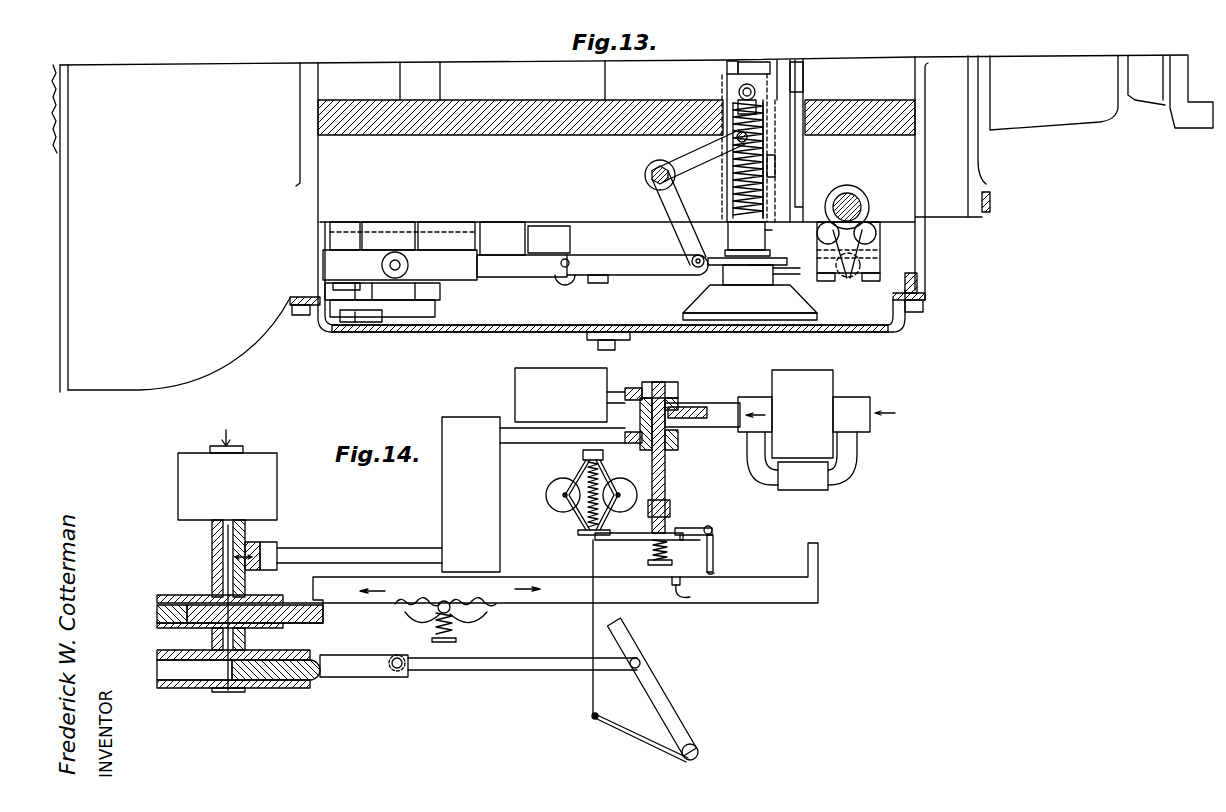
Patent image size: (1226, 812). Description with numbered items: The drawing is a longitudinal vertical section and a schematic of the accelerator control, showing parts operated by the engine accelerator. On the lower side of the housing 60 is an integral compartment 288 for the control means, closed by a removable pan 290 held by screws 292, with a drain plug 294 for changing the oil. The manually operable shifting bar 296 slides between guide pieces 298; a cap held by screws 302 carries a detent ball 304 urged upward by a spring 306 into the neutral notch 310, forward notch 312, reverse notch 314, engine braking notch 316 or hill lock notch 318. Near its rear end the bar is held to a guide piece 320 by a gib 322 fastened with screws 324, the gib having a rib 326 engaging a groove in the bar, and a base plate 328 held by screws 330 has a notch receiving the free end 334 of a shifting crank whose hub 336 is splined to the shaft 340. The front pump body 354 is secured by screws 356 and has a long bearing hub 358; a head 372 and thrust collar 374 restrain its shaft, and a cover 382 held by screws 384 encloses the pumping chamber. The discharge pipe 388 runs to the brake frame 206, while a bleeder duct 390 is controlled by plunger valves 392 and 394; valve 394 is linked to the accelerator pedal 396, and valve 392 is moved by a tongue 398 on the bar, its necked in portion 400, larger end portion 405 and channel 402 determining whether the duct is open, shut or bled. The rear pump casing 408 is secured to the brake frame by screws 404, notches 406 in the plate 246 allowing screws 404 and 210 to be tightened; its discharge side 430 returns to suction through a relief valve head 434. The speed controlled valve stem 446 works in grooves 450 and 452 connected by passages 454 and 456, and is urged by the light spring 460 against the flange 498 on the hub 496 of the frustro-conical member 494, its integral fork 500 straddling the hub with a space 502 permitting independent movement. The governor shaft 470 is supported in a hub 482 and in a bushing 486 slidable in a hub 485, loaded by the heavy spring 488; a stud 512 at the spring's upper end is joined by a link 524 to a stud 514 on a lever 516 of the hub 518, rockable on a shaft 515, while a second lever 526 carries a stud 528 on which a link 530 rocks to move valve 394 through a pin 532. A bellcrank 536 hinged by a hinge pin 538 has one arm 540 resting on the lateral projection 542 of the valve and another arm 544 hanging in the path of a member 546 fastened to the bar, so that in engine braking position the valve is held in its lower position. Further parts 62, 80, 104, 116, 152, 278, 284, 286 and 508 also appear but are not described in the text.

In FIG. 13, the housing 60 is at (340, 118).
In FIG. 13, the curved housing wall 62 is at (256, 330).
In FIG. 13, the housing top 80 is at (358, 72).
In FIG. 13, the housing partition 104 is at (425, 72).
In FIG. 13, the guide member 116 is at (786, 70).
In FIG. 14, the control unit 152 is at (528, 385).
In FIG. 13, the brake frame 206 is at (680, 74).
In FIG. 14, the brake frame 206 is at (441, 498).
In FIG. 13, the screws 210 is at (733, 60).
In FIG. 13, the plate 246 is at (800, 90).
In FIG. 13, the end bracket 278 is at (1150, 103).
In FIG. 13, the side wall 284 is at (982, 160).
In FIG. 13, the stop block 286 is at (986, 213).
In FIG. 13, the compartment 288 is at (918, 280).
In FIG. 13, the removable pan 290 is at (892, 329).
In FIG. 13, the screws 292 is at (295, 315).
In FIG. 13, the drain plug 294 is at (616, 345).
In FIG. 13, the shifting bar 296 is at (500, 232).
In FIG. 14, the shifting bar 296 is at (406, 590).
In FIG. 13, the guide pieces 298 is at (560, 232).
In FIG. 13, the screws 302 is at (600, 283).
In FIG. 14, the detent ball 304 is at (436, 630).
In FIG. 14, the spring 306 is at (458, 640).
In FIG. 14, the neutral notch 310 is at (446, 601).
In FIG. 14, the forward notch 312 is at (406, 618).
In FIG. 14, the reverse notch 314 is at (470, 622).
In FIG. 14, the engine braking notch 316 is at (396, 605).
In FIG. 14, the hill lock notch 318 is at (476, 604).
In FIG. 13, the guide piece 320 is at (870, 222).
In FIG. 13, the gib 322 is at (880, 258).
In FIG. 13, the screws 324 is at (878, 280).
In FIG. 13, the rib 326 is at (880, 250).
In FIG. 13, the base plate 328 is at (876, 236).
In FIG. 13, the screws 330 is at (878, 228).
In FIG. 13, the free end of shifting crank 334 is at (852, 277).
In FIG. 13, the hub of crank 336 is at (862, 194).
In FIG. 13, the shaft 340 is at (850, 192).
In FIG. 13, the pump body 354 is at (322, 245).
In FIG. 14, the pump body 354 is at (260, 492).
In FIG. 13, the screws 356 is at (333, 287).
In FIG. 13, the long bearing hub 358 is at (346, 226).
In FIG. 13, the head 372 is at (360, 323).
In FIG. 13, the thrust collar 374 is at (352, 322).
In FIG. 13, the cover 382 is at (436, 300).
In FIG. 13, the screws 384 is at (436, 314).
In FIG. 14, the discharge pipe 388 is at (318, 554).
In FIG. 13, the bleeder duct 390 is at (382, 265).
In FIG. 14, the bleeder duct 390 is at (225, 577).
In FIG. 14, the plunger valve 392 is at (310, 624).
In FIG. 13, the plunger valve 394 is at (497, 268).
In FIG. 14, the plunger valve 394 is at (342, 660).
In FIG. 14, the accelerator pedal 396 is at (655, 678).
In FIG. 14, the tongue 398 is at (320, 606).
In FIG. 14, the necked in portion 400 is at (212, 624).
In FIG. 14, the channel 402 is at (294, 602).
In FIG. 13, the screws 404 is at (774, 164).
In FIG. 14, the larger end portion 405 is at (186, 612).
In FIG. 13, the notches 406 is at (800, 65).
In FIG. 14, the rear pump casing 408 is at (800, 384).
In FIG. 14, the discharge side 430 is at (745, 425).
In FIG. 14, the valve head 434 is at (808, 490).
In FIG. 14, the valve stem 446 is at (665, 477).
In FIG. 14, the internal annular groove 450 is at (678, 390).
In FIG. 14, the internal annular groove 452 is at (678, 440).
In FIG. 14, the passage 454 is at (632, 390).
In FIG. 14, the passage 456 is at (632, 443).
In FIG. 14, the spring 460 is at (652, 552).
In FIG. 13, the shaft 470 is at (762, 186).
In FIG. 13, the hub 482 is at (752, 73).
In FIG. 13, the hub 485 is at (766, 231).
In FIG. 13, the bushing 486 is at (730, 240).
In FIG. 13, the spring 488 is at (732, 196).
In FIG. 14, the spring 488 is at (572, 538).
In FIG. 13, the frustro-conical member 494 is at (802, 305).
In FIG. 13, the hub 496 is at (782, 271).
In FIG. 13, the flange 498 is at (738, 265).
In FIG. 13, the integral fork 500 is at (766, 266).
In FIG. 13, the space 502 is at (722, 278).
In FIG. 13, the spring plate 508 is at (762, 250).
In FIG. 13, the stud 512 is at (739, 91).
In FIG. 13, the second stud 514 is at (748, 136).
In FIG. 13, the shaft 515 is at (655, 180).
In FIG. 13, the lever 516 is at (686, 160).
In FIG. 13, the hub 518 is at (645, 170).
In FIG. 13, the link 524 is at (758, 113).
In FIG. 13, the lever 526 is at (670, 204).
In FIG. 13, the stud 528 is at (690, 261).
In FIG. 13, the link 530 is at (640, 258).
In FIG. 14, the link 530 is at (483, 671).
In FIG. 13, the pin 532 is at (565, 259).
In FIG. 14, the bellcrank 536 is at (713, 543).
In FIG. 14, the hinge pin 538 is at (712, 527).
In FIG. 14, the arm 540 is at (682, 527).
In FIG. 14, the lateral projection 542 is at (680, 541).
In FIG. 14, the arm 544 is at (716, 570).
In FIG. 14, the member 546 is at (694, 594).